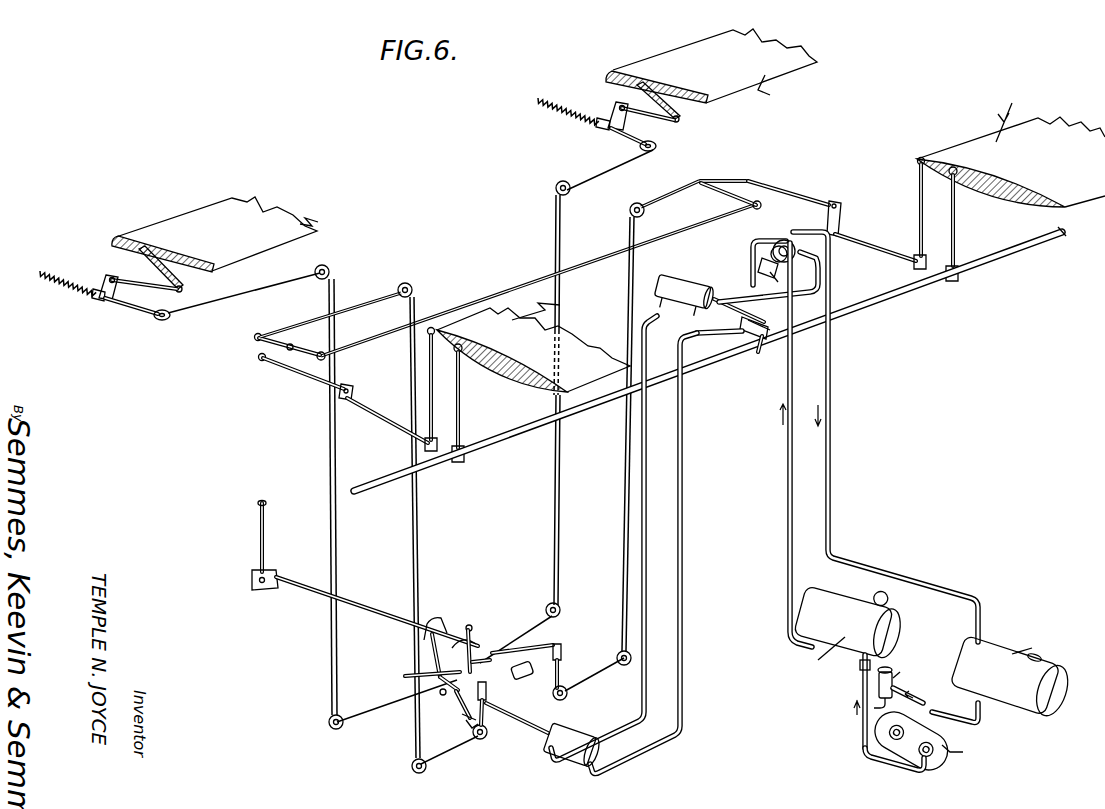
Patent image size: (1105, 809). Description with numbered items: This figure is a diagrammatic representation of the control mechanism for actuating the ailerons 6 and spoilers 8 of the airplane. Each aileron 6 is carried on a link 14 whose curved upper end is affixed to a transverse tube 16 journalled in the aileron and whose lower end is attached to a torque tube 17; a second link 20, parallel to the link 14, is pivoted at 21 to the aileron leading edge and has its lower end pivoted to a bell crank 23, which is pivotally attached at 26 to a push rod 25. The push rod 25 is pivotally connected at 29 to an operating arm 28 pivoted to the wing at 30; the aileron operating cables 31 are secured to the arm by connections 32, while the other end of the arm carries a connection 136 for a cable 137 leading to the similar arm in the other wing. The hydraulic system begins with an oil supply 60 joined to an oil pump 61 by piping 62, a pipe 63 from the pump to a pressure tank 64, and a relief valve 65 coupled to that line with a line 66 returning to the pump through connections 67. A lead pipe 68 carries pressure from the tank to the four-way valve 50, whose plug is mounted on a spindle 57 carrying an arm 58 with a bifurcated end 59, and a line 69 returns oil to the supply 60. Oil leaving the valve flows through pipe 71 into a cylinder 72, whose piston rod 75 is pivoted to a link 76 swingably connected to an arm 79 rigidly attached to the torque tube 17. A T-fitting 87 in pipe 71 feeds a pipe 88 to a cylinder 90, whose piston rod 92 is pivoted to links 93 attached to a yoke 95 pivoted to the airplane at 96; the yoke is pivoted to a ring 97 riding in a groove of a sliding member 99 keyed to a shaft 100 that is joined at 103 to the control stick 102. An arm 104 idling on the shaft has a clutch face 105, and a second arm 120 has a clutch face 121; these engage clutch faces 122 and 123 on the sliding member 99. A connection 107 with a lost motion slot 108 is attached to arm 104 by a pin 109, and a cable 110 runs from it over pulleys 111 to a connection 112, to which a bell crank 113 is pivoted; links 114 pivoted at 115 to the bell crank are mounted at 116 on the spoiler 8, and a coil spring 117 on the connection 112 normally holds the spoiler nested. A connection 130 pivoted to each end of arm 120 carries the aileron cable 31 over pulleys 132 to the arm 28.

The aileron 6 is at (522, 383).
The spoiler 8 is at (181, 222).
The link 14 is at (461, 390).
The tube 16 is at (466, 345).
The torque tube 17 is at (436, 470).
The second link 20 is at (427, 381).
The pivot 21 is at (433, 326).
The bell crank 23 is at (375, 420).
The push rod 25 is at (295, 370).
The pivotal attachment 26 is at (350, 386).
The operating arm 28 is at (282, 343).
The pivotal connection 29 is at (258, 360).
The pivot 30 is at (293, 345).
The aileron operating cable 31 is at (294, 323).
The connection 32 is at (256, 334).
The valve 50 is at (786, 240).
The spindle 57 is at (776, 246).
The arm 58 is at (760, 266).
The bifurcated end 59 is at (774, 283).
The oil supply 60 is at (992, 645).
The oil pump 61 is at (950, 760).
The piping 62 is at (980, 721).
The pipe 63 is at (864, 744).
The pressure tank 64 is at (835, 603).
The relief valve 65 is at (878, 690).
The line 66 is at (862, 720).
The connections 67 is at (938, 706).
The lead pipe 68 is at (787, 534).
The line 69 is at (831, 282).
The pipe 71 is at (810, 295).
The cylinder 72 is at (688, 288).
The piston rod 75 is at (722, 304).
The link 76 is at (750, 332).
The arm 79 is at (761, 354).
The T-fitting 87 is at (699, 338).
The pipe 88 is at (678, 348).
The cylinder 90 is at (575, 740).
The piston rod 92 is at (528, 732).
The links 93 is at (468, 724).
The yoke 95 is at (464, 718).
The pivot 96 is at (460, 702).
The ring 97 is at (480, 640).
The sliding member 99 is at (472, 624).
The shaft 100 is at (366, 610).
The control stick 102 is at (258, 510).
The connection 103 is at (252, 585).
The arm 104 is at (432, 650).
The clutch face 105 is at (462, 632).
The connection 107 is at (432, 670).
The lost motion slot 108 is at (443, 696).
The pin 109 is at (448, 681).
The cable 110 is at (142, 311).
The pulleys 111 is at (163, 321).
The connection 112 is at (100, 300).
The bell crank 113 is at (112, 264).
The links 114 is at (182, 280).
The pivot 115 is at (180, 292).
The pivotal mounting 116 is at (122, 245).
The coil spring 117 is at (60, 285).
The second arm 120 is at (518, 680).
The clutch face 121 is at (490, 652).
The clutch face 122 is at (434, 620).
The clutch face 123 is at (526, 652).
The connection 130 is at (563, 650).
The pulleys 132 is at (412, 287).
The connection 136 is at (326, 352).
The cable 137 is at (493, 290).